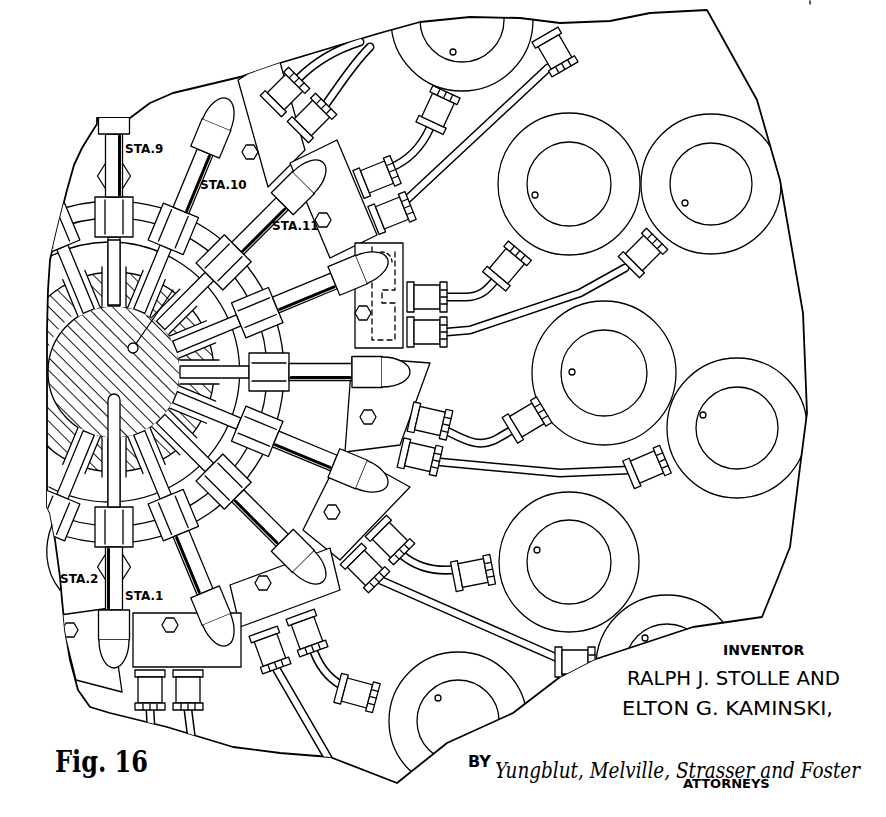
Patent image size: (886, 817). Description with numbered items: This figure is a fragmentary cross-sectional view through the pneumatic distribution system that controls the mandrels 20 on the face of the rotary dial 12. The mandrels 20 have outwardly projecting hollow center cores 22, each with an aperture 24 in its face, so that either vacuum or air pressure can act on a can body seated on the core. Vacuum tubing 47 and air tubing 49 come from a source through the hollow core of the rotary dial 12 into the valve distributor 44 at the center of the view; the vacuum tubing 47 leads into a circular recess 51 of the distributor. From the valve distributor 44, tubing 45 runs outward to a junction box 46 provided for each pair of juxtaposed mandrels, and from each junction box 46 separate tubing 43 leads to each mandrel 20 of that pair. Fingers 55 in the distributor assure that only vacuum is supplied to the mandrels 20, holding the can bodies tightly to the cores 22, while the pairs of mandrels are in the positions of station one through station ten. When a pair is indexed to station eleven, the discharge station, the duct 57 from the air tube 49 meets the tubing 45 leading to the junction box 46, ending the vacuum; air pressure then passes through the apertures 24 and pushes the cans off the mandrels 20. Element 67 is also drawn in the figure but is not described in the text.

The rotary dial 12 is at (772, 312).
The mandrels 20 is at (752, 155).
The hollow center cores 22 is at (817, 15).
The aperture 24 is at (706, 415).
The tubing 43 is at (415, 560).
The valve distributor 44 is at (283, 343).
The tubing 45 is at (258, 222).
The junction box 46 is at (338, 167).
The tubing 47 is at (78, 530).
The tubing 49 is at (136, 343).
The circular recess 51 is at (190, 510).
The fingers 55 is at (203, 247).
The duct 57 is at (153, 333).
The fitting 67 is at (245, 264).